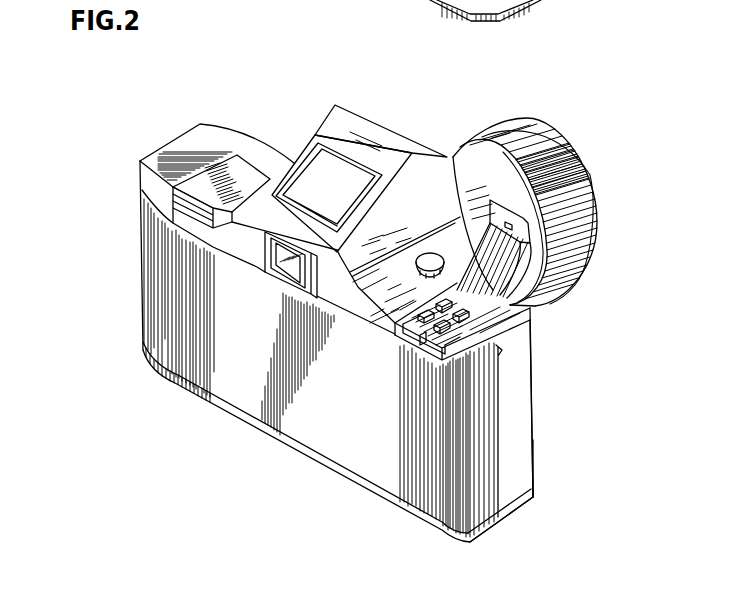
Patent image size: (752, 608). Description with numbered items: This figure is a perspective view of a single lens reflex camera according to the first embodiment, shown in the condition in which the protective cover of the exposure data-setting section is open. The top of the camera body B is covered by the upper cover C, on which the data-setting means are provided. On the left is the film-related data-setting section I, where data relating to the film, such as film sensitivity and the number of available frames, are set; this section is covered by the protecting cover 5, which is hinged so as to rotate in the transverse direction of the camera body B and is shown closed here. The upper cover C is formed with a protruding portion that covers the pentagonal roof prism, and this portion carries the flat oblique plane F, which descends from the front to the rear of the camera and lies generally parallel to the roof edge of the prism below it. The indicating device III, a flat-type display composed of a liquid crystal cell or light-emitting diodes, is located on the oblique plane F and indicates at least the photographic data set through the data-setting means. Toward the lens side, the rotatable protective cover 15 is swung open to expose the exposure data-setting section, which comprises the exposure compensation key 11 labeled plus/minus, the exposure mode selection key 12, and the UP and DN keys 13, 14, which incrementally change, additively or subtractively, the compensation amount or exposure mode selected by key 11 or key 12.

The film-related data-setting section I is at (195, 178).
The protecting cover 5 is at (221, 175).
The indicating device III is at (323, 157).
The flat oblique plane F is at (363, 138).
The rotatable protective cover 15 is at (497, 213).
The exposure mode selection key 12 is at (540, 262).
The exposure compensation key 11 is at (538, 304).
The UP key 13 is at (397, 337).
The DN key 14 is at (430, 355).
The upper cover C is at (531, 327).
The camera body B is at (541, 433).